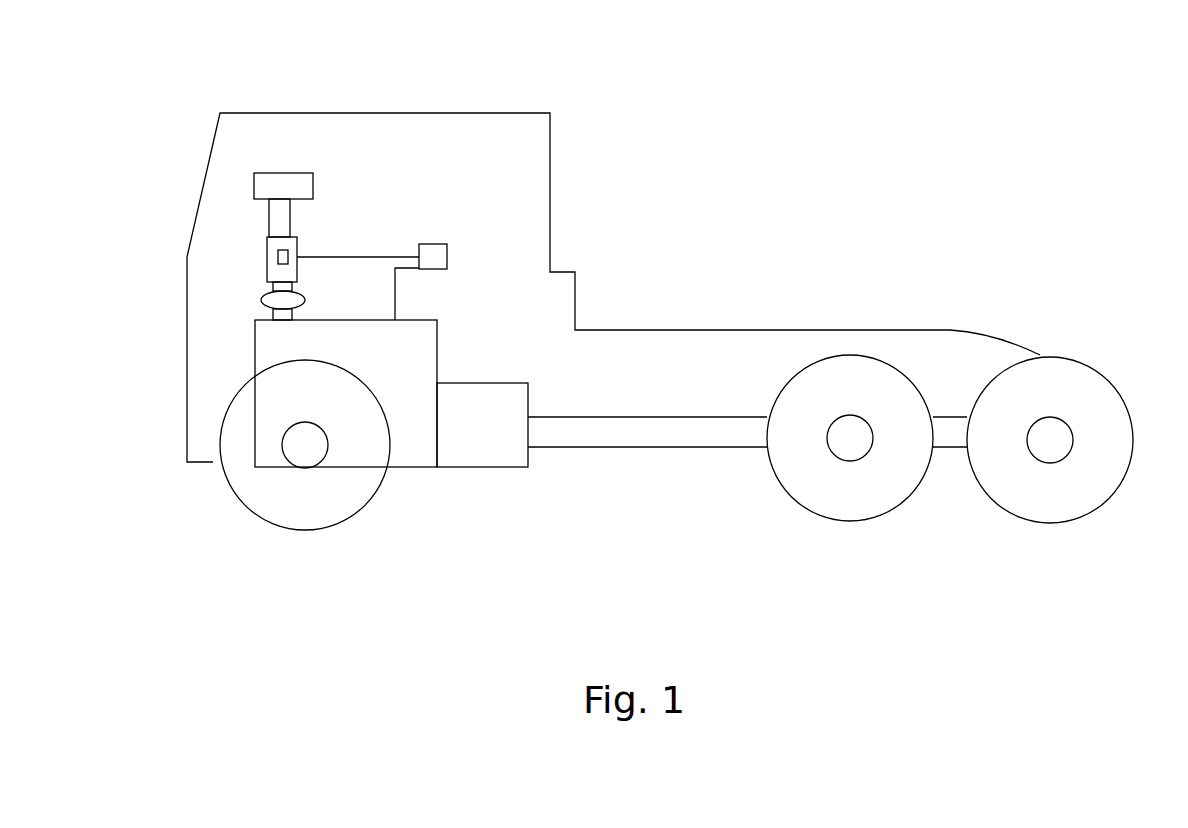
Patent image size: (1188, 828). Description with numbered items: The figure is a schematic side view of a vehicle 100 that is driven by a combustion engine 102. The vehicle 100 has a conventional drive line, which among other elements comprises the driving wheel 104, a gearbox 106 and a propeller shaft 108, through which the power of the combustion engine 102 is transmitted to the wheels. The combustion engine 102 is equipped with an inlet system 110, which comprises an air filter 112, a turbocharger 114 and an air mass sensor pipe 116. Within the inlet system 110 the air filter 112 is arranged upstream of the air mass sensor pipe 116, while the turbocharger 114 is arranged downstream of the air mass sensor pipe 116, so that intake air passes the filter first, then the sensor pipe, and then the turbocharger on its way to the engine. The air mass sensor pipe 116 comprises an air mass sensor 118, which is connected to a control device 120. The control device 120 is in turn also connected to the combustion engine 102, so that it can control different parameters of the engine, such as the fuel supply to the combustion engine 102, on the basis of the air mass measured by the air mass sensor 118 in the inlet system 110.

The vehicle 100 is at (664, 94).
The combustion engine 102 is at (430, 320).
The driving wheel 104 is at (898, 512).
The gearbox 106 is at (462, 467).
The propeller shaft 108 is at (730, 450).
The inlet system 110 is at (283, 225).
The air filter 112 is at (273, 185).
The turbocharger 114 is at (261, 300).
The air mass sensor pipe 116 is at (267, 258).
The air mass sensor 118 is at (297, 262).
The control device 120 is at (430, 244).